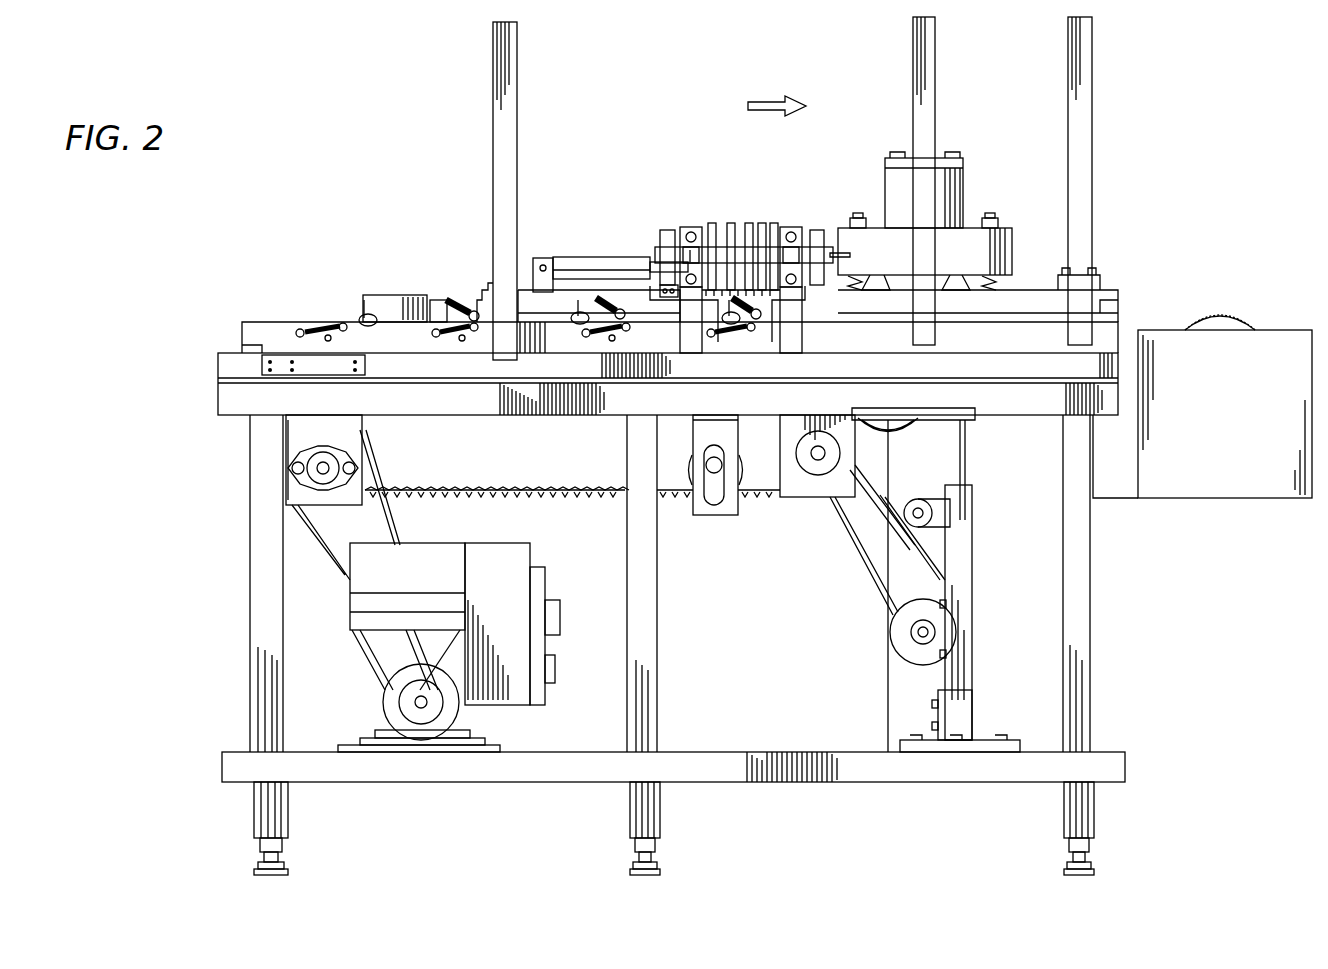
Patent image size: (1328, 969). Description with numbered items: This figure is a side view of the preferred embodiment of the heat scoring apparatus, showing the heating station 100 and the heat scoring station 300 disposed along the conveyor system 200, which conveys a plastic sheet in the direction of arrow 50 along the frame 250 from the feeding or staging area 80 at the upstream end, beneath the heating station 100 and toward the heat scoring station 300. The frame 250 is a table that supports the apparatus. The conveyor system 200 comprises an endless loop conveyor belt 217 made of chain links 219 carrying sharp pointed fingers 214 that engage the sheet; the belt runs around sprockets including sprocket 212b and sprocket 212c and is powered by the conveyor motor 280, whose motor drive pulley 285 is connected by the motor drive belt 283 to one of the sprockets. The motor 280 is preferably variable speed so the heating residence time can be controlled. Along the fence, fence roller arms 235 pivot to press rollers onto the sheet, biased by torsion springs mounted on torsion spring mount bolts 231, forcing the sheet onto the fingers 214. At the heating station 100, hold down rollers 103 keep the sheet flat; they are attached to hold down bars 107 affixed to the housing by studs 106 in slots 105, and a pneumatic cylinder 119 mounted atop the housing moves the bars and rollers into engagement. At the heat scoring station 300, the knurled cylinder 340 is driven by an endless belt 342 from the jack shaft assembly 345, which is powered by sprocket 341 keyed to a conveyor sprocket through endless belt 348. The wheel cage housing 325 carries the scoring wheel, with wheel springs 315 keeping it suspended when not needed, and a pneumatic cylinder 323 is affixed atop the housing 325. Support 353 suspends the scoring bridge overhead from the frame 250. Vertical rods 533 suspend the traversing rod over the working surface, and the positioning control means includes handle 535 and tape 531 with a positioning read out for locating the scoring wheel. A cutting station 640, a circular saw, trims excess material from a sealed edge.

The arrow 50 is at (759, 106).
The feeding or staging area 80 is at (244, 296).
The heating station 100 is at (343, 182).
The hold down rollers 103 is at (370, 314).
The slots 105 is at (460, 308).
The studs 106 is at (470, 305).
The hold down bar 107 is at (392, 300).
The pneumatic cylinder 119 is at (592, 262).
The conveyor system 200 is at (258, 464).
The sprocket 212b is at (362, 460).
The sprocket 212c is at (812, 466).
The sharp pointed fingers 214 is at (570, 500).
The endless loop conveyor belt 217 is at (538, 488).
The chain links 219 is at (448, 488).
The torsion spring mount bolt 231 is at (318, 330).
The fence roller arm 235 is at (333, 338).
The frame 250 is at (222, 398).
The conveyor motor 280 is at (510, 700).
The motor drive belt 283 is at (368, 650).
The motor drive pulley 285 is at (408, 702).
The heat scoring station 300 is at (990, 125).
The wheel springs 315 is at (1000, 290).
The pneumatic cylinder 323 is at (895, 185).
The wheel cage housing 325 is at (968, 225).
The knurled cylinder 340 is at (923, 434).
The sprocket 341 is at (905, 650).
The endless belt 342 is at (968, 462).
The jack shaft assembly 345 is at (968, 648).
The endless belt 348 is at (848, 560).
The support 353 is at (914, 110).
The tape 531 is at (750, 227).
The vertical rods 533 is at (510, 118).
The handle 535 is at (667, 232).
The cutting station 640 is at (1223, 500).